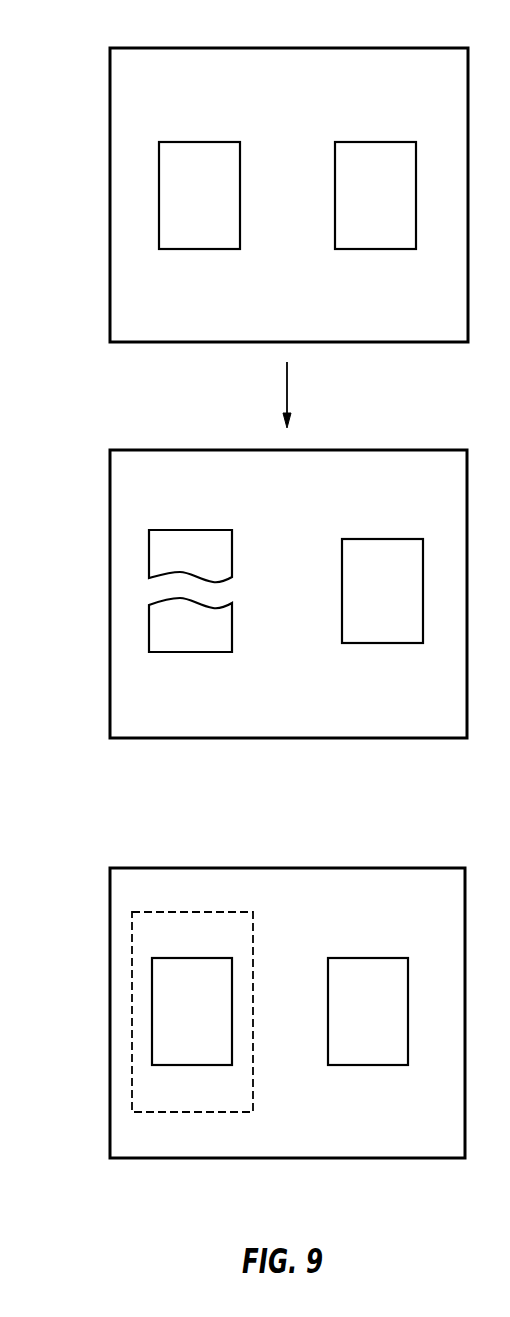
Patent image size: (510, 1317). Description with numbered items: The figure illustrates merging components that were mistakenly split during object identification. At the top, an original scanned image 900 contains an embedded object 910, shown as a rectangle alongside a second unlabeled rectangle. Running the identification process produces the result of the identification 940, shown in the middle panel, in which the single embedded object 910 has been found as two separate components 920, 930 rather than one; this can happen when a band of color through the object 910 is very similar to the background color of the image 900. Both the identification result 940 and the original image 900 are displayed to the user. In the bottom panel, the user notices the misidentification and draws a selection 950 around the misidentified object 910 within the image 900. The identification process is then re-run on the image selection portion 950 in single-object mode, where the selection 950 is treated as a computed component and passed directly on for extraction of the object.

The image 900 is at (183, 47).
The embedded object 910 is at (197, 141).
The component 920 is at (205, 529).
The component 930 is at (203, 653).
The result of the identification 940 is at (182, 449).
The selection 950 is at (212, 911).